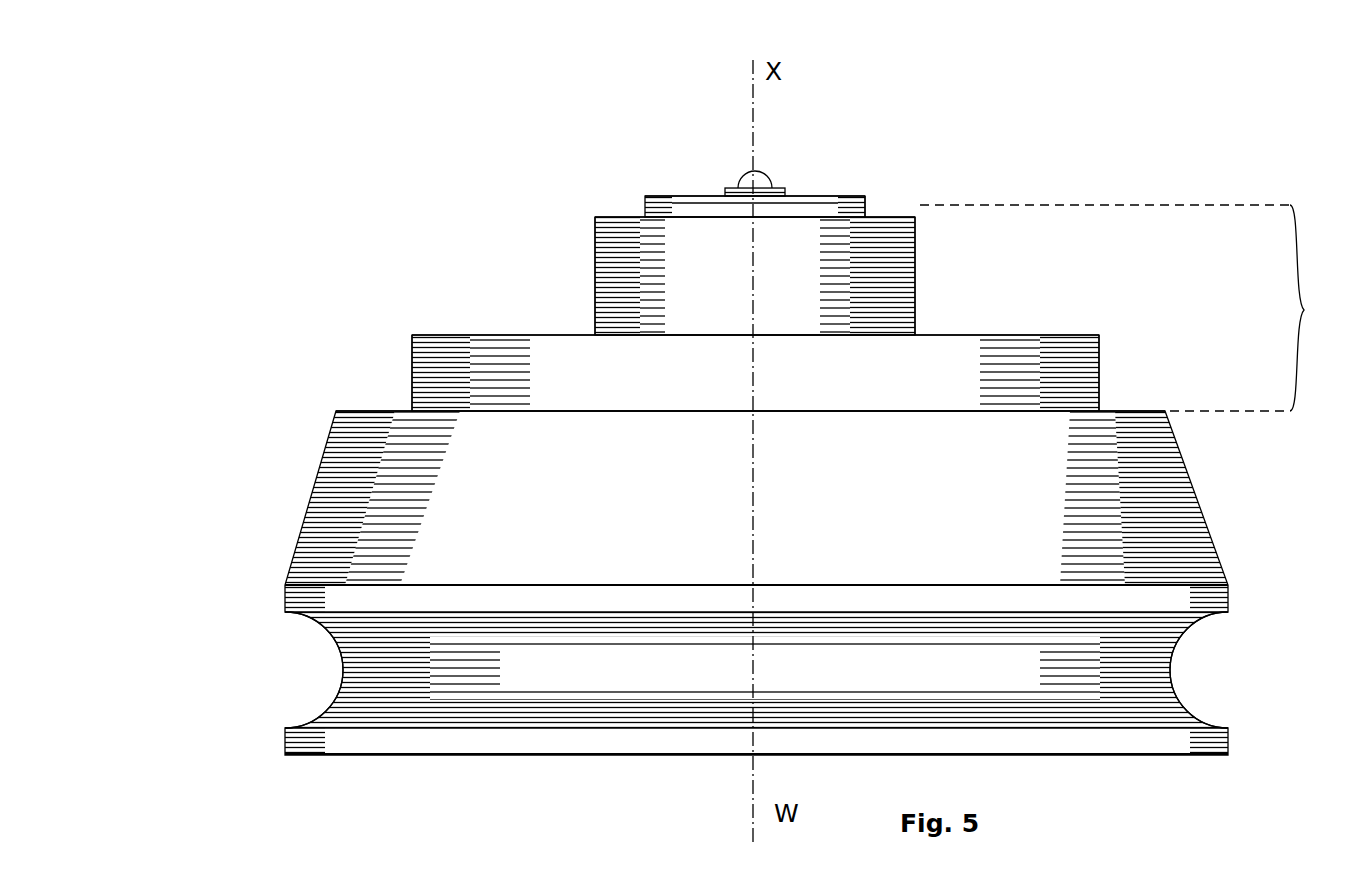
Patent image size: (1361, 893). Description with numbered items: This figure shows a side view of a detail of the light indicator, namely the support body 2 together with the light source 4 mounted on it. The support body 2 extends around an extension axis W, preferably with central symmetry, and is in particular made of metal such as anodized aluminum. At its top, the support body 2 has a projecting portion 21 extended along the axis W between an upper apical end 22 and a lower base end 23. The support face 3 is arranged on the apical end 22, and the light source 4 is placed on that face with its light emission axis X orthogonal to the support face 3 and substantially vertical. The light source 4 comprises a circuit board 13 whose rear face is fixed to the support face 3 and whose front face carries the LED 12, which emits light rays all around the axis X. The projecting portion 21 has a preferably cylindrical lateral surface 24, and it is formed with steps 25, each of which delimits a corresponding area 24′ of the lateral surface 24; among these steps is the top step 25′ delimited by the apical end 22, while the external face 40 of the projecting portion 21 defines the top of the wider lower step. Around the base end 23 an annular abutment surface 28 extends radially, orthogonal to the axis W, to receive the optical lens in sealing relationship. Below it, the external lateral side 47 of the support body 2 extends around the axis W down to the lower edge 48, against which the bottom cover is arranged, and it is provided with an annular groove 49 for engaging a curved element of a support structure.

The support body 2 is at (255, 358).
The support face 3 is at (798, 203).
The light source 4 is at (786, 164).
The LED 12 is at (747, 177).
The circuit board 13 is at (668, 196).
The projecting portion 21 is at (1130, 308).
The apical end 22 is at (637, 196).
The base end 23 is at (482, 413).
The lateral surface 24 is at (890, 205).
The area of the lateral surface 24′ is at (880, 208).
The step 25 is at (642, 212).
The top step 25′ is at (850, 197).
The abutment surface 28 is at (1160, 411).
The external face 40 is at (995, 336).
The external lateral side 47 is at (1201, 511).
The lower edge 48 is at (1105, 756).
The annular groove 49 is at (1215, 668).